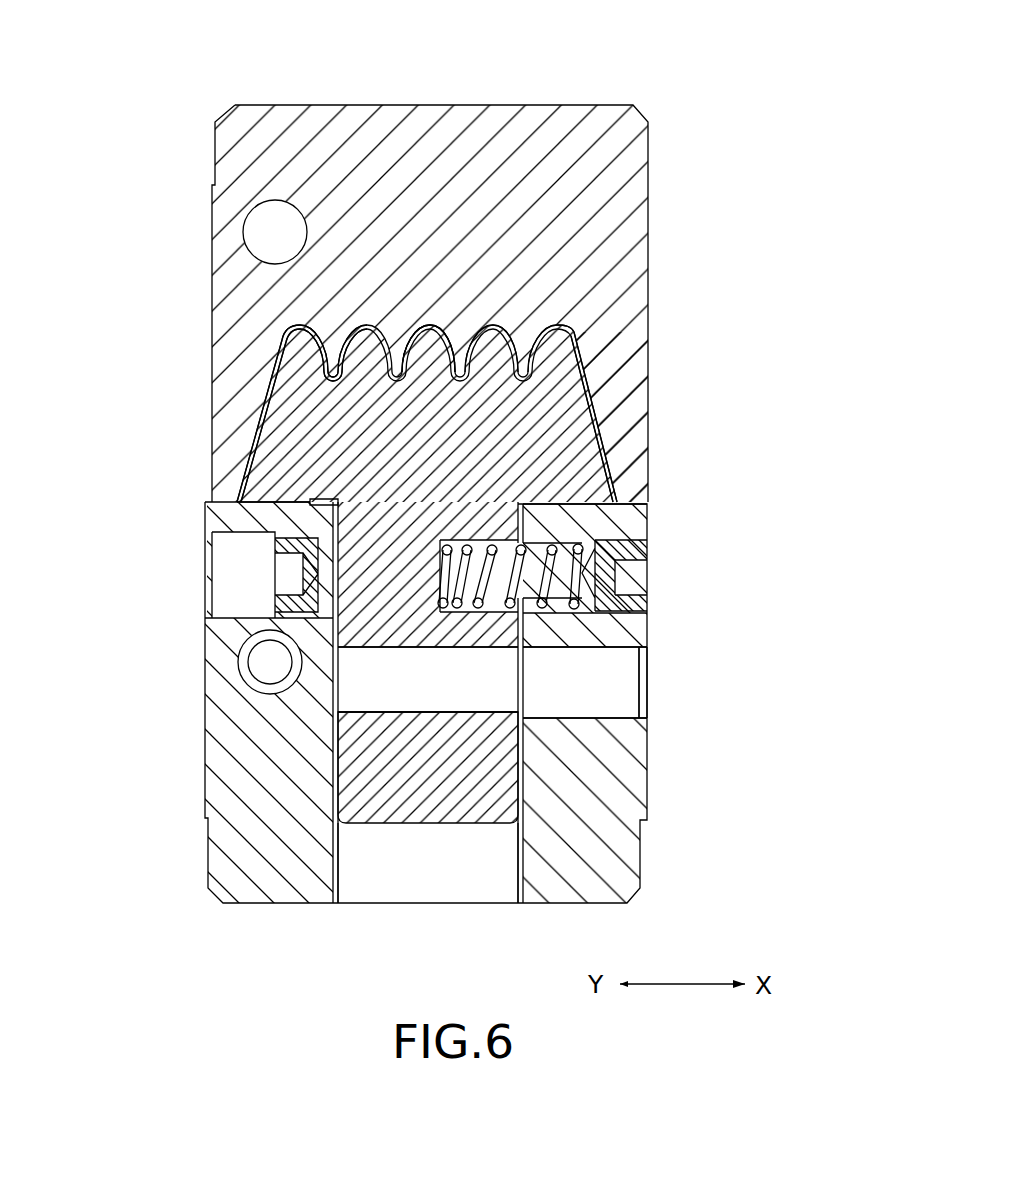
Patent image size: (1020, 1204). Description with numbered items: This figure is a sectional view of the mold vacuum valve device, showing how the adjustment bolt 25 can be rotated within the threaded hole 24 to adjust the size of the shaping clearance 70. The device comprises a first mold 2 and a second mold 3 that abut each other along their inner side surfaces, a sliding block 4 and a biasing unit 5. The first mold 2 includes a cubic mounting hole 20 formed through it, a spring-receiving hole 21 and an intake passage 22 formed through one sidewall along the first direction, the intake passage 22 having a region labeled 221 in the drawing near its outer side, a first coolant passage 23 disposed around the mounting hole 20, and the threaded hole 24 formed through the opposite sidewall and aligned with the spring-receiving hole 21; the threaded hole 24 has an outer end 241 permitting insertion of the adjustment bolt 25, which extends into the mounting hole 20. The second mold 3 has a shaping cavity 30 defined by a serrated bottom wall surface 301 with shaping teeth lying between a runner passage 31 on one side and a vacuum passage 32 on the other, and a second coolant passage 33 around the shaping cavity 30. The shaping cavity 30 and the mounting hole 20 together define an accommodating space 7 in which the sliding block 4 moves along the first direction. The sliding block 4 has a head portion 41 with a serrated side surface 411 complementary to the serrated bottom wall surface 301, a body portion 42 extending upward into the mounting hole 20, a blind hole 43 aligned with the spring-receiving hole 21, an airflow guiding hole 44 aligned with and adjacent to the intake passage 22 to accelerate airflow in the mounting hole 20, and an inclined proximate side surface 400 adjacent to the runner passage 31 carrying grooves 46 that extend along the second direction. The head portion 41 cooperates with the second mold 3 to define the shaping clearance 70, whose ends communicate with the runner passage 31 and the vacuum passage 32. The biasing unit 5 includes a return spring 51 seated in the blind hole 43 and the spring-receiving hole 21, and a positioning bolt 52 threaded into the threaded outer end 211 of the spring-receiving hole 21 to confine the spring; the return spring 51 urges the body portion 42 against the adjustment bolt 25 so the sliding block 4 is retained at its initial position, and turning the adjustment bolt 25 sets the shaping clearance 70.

The first mold 2 is at (265, 858).
The second mold 3 is at (640, 255).
The sliding block 4 is at (270, 455).
The biasing unit 5 is at (733, 545).
The accommodating space 7 is at (304, 415).
The mounting hole 20 is at (433, 840).
The spring-receiving hole 21 is at (538, 506).
The intake passage 22 is at (622, 680).
The first coolant passage 23 is at (265, 664).
The threaded hole 24 is at (218, 545).
The adjustment bolt 25 is at (282, 584).
The shaping cavity 30 is at (428, 348).
The runner passage 31 is at (305, 501).
The vacuum passage 32 is at (645, 503).
The second coolant passage 33 is at (270, 228).
The head portion 41 is at (565, 393).
The body portion 42 is at (480, 800).
The blind hole 43 is at (590, 445).
The airflow guiding hole 44 is at (470, 705).
The grooves 46 is at (268, 380).
The return spring 51 is at (580, 556).
The positioning bolt 52 is at (632, 574).
The shaping clearance 70 is at (262, 428).
The threaded outer end 211 is at (648, 618).
The cavity side wall 221 is at (645, 718).
The outer end 241 is at (212, 620).
The serrated bottom wall surface 301 is at (492, 325).
The inclined proximate side surface 400 is at (245, 478).
The serrated side surface 411 is at (578, 337).